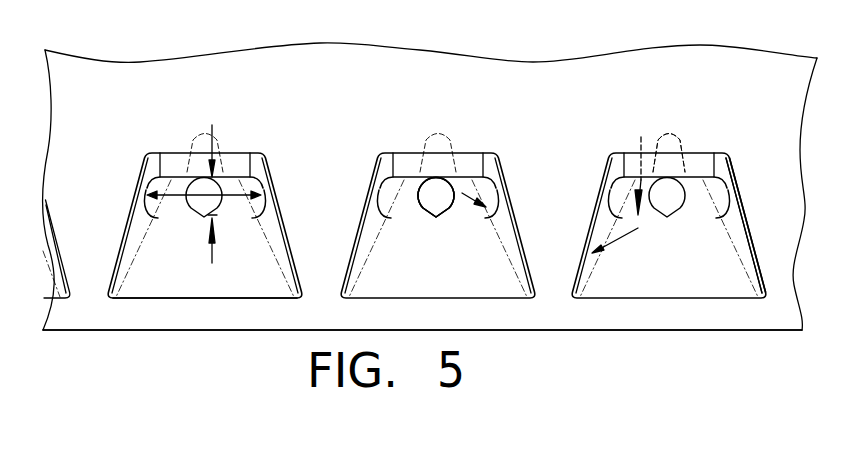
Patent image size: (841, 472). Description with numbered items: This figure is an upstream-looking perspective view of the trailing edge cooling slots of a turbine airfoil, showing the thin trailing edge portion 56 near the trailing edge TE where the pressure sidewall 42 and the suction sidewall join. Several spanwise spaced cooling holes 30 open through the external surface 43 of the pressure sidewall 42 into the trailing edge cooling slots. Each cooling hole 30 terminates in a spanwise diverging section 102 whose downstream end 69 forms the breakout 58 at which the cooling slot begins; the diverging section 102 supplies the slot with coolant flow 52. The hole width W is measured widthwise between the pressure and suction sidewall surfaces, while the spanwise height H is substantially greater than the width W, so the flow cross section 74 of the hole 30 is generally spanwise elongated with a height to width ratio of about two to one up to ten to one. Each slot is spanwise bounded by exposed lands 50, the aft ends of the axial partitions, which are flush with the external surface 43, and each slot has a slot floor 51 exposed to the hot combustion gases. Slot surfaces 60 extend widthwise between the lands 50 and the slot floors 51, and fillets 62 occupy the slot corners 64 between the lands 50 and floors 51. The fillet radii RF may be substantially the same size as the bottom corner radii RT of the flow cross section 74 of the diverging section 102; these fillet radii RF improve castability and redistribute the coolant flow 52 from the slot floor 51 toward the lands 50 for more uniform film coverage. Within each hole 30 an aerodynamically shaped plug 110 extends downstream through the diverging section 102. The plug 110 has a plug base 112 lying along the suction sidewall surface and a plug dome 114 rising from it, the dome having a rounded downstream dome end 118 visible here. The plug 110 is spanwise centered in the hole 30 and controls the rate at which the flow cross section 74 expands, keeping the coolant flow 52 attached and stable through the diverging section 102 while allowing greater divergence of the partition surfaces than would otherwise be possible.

The external surface 43 is at (366, 64).
The pressure sidewall 42 is at (405, 89).
The trailing edge TE is at (650, 331).
The slot floor 51 is at (250, 250).
The trailing edge portion 56 is at (200, 273).
The flow cross section 74 is at (178, 187).
The slot surfaces 60 is at (150, 228).
The downstream end 69 is at (230, 225).
The breakout 58 is at (186, 152).
The hole width W is at (216, 137).
The spanwise height H is at (193, 198).
The lands 50 is at (547, 227).
The diverging section 102 is at (460, 187).
The downstream dome end 118 is at (436, 192).
The bottom corner radii RT is at (462, 193).
The plug base 112 is at (428, 202).
The cooling hole 30 is at (715, 165).
The fillets 62 is at (733, 230).
The slot corners 64 is at (742, 246).
The plug 110 is at (663, 178).
The plug dome 114 is at (668, 165).
The coolant flow 52 is at (632, 162).
The fillet radii RF is at (612, 238).